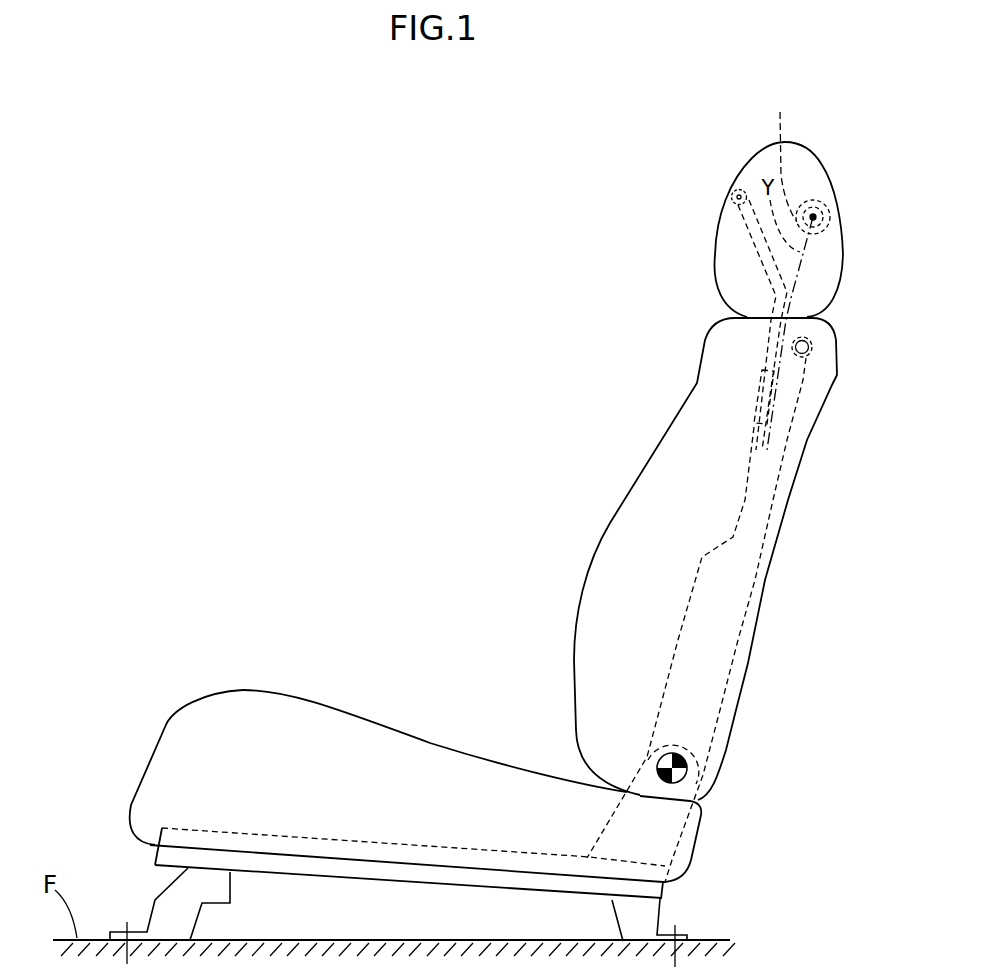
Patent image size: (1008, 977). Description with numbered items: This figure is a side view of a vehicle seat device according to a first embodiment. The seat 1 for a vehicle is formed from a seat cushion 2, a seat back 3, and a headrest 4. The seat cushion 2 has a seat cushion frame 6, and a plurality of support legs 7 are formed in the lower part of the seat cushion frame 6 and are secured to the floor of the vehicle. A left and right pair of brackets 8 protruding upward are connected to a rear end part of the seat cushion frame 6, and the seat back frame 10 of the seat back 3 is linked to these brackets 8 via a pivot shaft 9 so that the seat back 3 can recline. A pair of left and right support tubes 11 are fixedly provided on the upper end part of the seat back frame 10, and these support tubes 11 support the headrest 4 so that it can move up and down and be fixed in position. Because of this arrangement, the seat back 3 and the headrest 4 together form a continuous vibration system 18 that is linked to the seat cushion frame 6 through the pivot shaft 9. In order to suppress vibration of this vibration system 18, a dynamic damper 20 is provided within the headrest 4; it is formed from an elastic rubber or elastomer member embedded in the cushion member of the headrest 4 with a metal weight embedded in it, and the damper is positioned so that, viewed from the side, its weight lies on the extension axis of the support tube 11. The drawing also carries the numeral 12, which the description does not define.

The seat 1 is at (430, 401).
The seat cushion 2 is at (315, 714).
The seat back 3 is at (610, 528).
The headrest 4 is at (719, 265).
The seat cushion frame 6 is at (376, 874).
The support legs 7 is at (167, 908).
The brackets 8 is at (672, 838).
The pivot shaft 9 is at (678, 777).
The seat back frame 10 is at (722, 650).
The support tubes 11 is at (765, 364).
The headrest link 12 is at (732, 218).
The vibration system 18 is at (594, 303).
The dynamic damper 20 is at (780, 153).